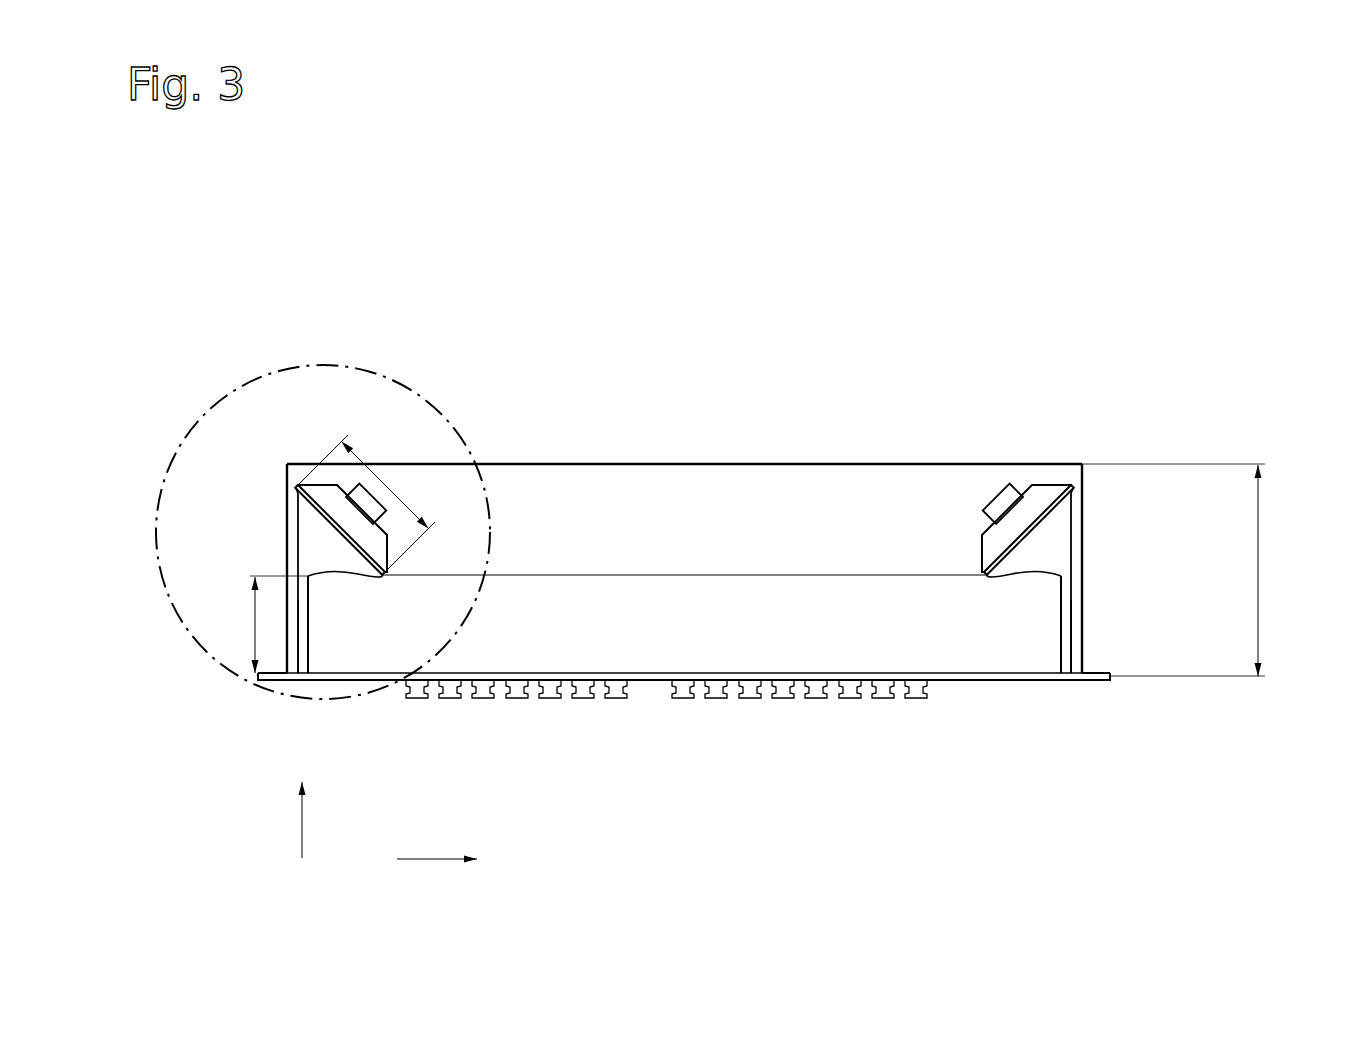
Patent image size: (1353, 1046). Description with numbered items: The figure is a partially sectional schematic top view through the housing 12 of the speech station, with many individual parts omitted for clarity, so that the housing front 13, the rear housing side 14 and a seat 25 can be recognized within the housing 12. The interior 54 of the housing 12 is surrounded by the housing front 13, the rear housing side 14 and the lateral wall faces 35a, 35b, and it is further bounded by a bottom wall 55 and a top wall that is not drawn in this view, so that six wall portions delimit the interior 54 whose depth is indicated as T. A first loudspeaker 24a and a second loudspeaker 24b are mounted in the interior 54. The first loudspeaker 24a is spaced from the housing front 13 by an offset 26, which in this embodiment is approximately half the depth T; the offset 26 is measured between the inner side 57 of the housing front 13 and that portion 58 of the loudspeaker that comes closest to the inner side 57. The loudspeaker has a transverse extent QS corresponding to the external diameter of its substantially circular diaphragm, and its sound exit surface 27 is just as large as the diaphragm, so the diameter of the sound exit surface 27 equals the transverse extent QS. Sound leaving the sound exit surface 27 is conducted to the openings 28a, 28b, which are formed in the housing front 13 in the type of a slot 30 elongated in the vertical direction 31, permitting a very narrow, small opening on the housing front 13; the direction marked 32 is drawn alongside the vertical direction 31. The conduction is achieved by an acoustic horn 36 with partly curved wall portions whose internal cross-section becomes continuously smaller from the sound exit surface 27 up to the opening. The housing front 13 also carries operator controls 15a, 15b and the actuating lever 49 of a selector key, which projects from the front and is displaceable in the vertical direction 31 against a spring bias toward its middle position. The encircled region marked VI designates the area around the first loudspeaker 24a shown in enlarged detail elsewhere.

The housing 12 is at (1085, 492).
The housing front 13 is at (635, 680).
The rear housing side 14 is at (686, 464).
The operator control 15a is at (419, 698).
The operator control 15b is at (458, 695).
The first loudspeaker 24a is at (365, 522).
The second loudspeaker 24b is at (991, 486).
The seat 25 is at (547, 520).
The offset 26 is at (255, 600).
The sound exit surface 27 is at (347, 553).
The opening 28a is at (297, 657).
The opening 28b is at (1067, 676).
The slot 30 is at (258, 680).
The vertical direction 31 is at (303, 828).
The horizontal direction 32 is at (440, 858).
The lateral wall face 35a is at (297, 515).
The lateral wall face 35b is at (1085, 568).
The acoustic horn 36 is at (361, 579).
The actuating lever 49 is at (920, 695).
The interior 54 is at (787, 495).
The bottom wall 55 is at (684, 627).
The inner side 57 is at (658, 673).
The portion of the loudspeaker 58 is at (466, 578).
The transverse extent QS is at (373, 480).
The depth T is at (1262, 582).
The detail view VI is at (262, 375).